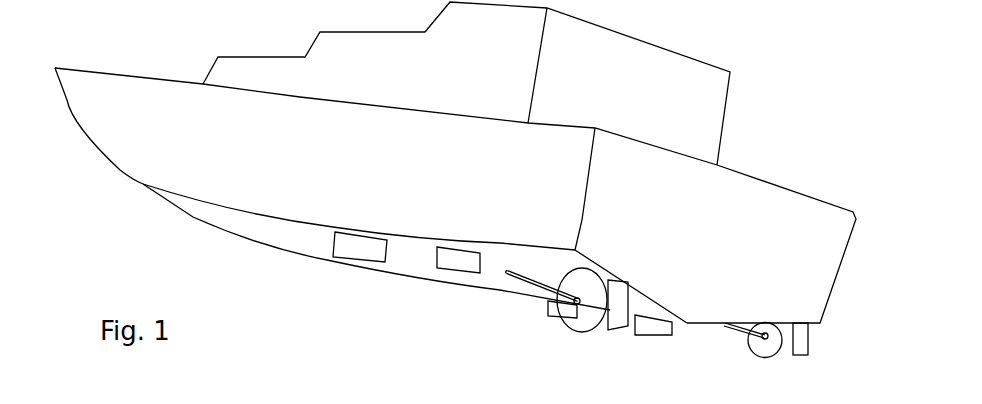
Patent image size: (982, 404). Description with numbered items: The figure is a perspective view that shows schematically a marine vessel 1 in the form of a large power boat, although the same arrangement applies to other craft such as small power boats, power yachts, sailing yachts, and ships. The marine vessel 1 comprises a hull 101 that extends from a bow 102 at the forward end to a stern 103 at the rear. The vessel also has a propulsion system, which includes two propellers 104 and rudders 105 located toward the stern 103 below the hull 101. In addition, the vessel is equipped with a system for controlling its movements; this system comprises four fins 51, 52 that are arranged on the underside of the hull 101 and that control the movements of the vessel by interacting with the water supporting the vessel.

The marine vessel 1 is at (768, 90).
The hull 101 is at (137, 158).
The bow 102 is at (55, 68).
The stern 103 is at (823, 215).
The propeller 104 is at (580, 328).
The rudder 105 is at (615, 330).
The fin 51 is at (443, 273).
The fin 52 is at (357, 256).